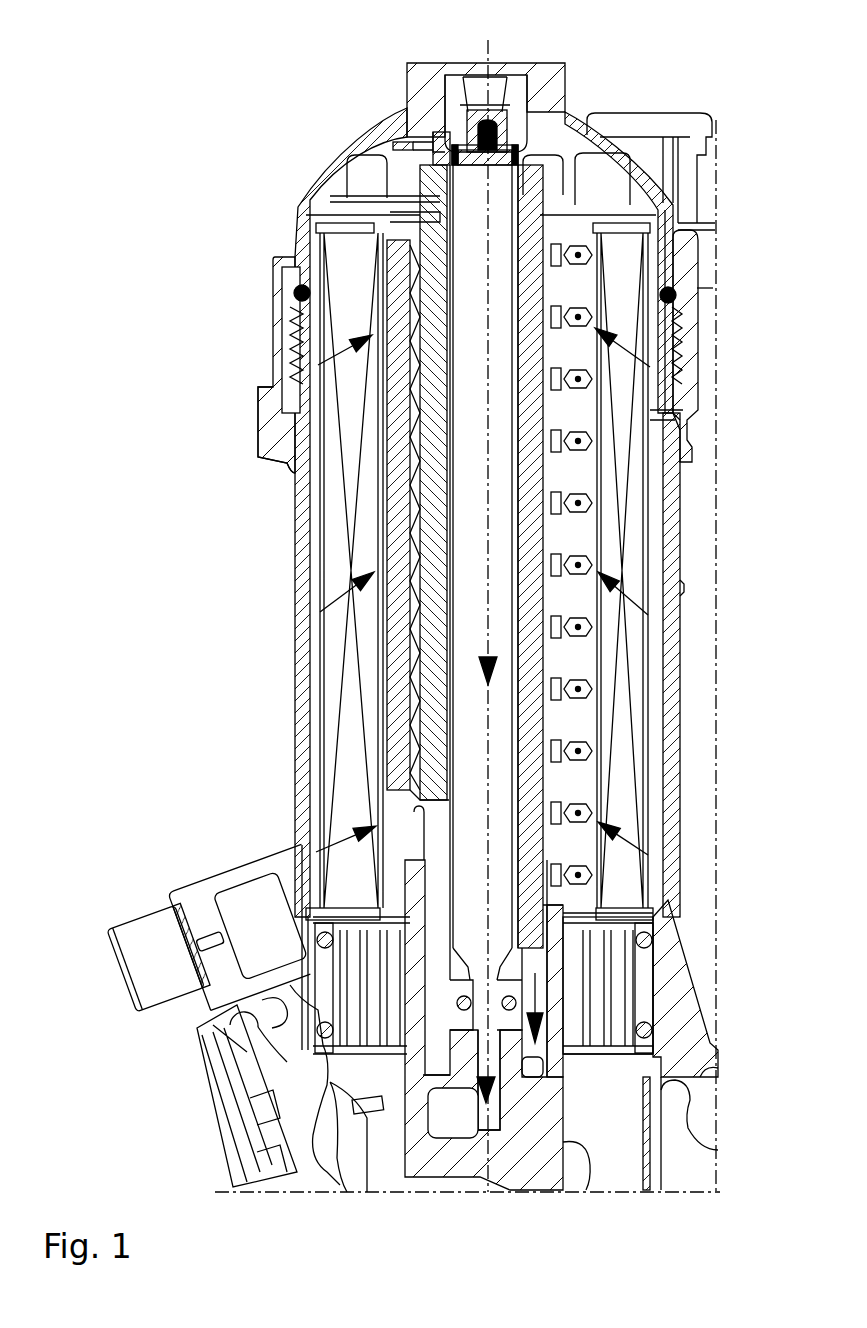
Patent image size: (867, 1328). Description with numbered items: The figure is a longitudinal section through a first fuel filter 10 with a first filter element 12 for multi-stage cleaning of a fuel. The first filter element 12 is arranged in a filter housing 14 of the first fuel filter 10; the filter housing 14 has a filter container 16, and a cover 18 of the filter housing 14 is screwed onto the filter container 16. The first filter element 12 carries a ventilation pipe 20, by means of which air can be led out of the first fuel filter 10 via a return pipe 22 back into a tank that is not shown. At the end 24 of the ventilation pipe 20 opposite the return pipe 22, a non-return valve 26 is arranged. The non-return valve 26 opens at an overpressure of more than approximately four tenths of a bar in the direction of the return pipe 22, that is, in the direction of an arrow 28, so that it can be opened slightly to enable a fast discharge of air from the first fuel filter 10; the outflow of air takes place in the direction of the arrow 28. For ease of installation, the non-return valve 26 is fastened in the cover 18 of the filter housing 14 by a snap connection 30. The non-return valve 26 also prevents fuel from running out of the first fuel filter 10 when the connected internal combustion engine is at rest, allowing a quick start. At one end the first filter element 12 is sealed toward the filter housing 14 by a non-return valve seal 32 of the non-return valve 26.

The first fuel filter 10 is at (175, 80).
The first filter element 12 is at (318, 215).
The filter housing 14 is at (232, 306).
The filter container 16 is at (265, 428).
The cover 18 is at (303, 238).
The ventilation pipe 20 is at (454, 907).
The return pipe 22 is at (500, 1113).
The end of the ventilation pipe 24 is at (560, 143).
The non-return valve 26 is at (500, 125).
The arrow 28 is at (445, 115).
The snap connection 30 is at (540, 70).
The non-return valve seal 32 is at (405, 147).